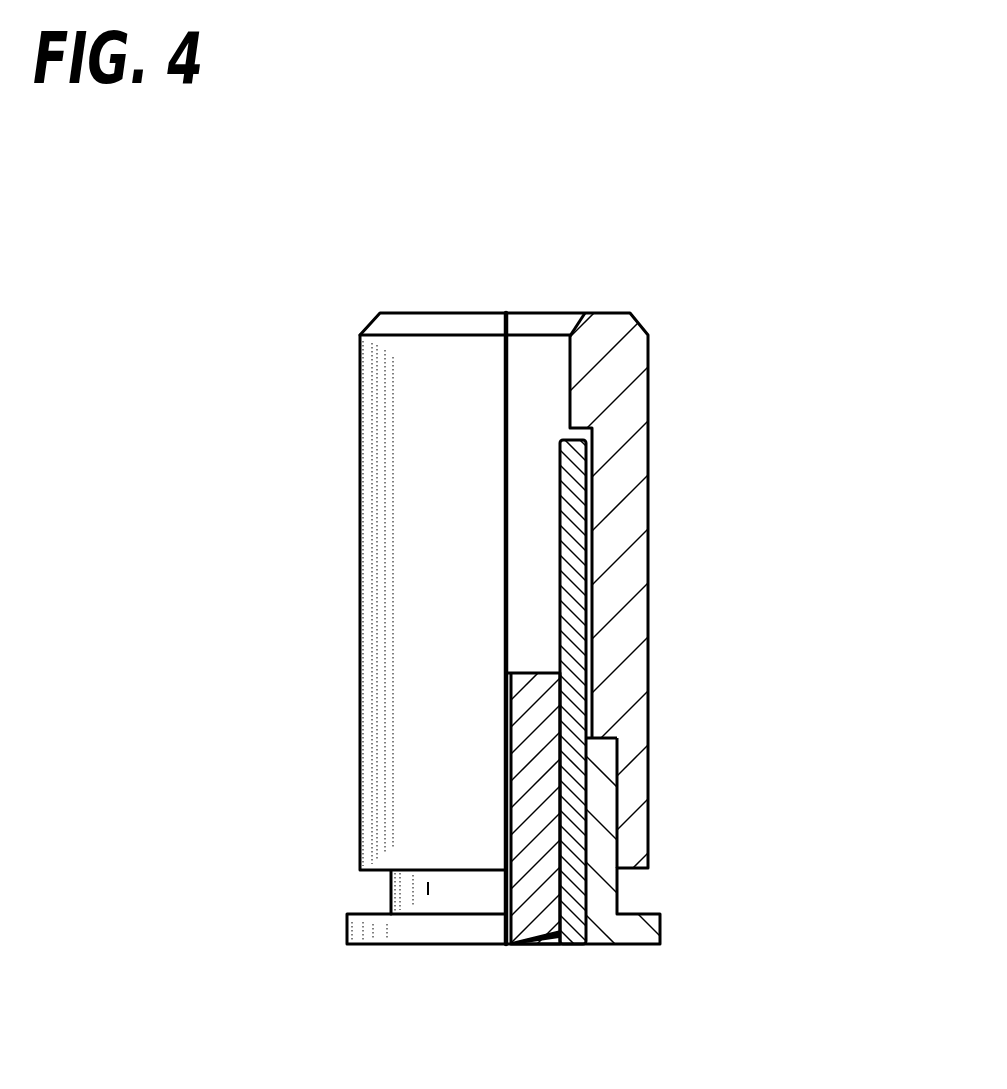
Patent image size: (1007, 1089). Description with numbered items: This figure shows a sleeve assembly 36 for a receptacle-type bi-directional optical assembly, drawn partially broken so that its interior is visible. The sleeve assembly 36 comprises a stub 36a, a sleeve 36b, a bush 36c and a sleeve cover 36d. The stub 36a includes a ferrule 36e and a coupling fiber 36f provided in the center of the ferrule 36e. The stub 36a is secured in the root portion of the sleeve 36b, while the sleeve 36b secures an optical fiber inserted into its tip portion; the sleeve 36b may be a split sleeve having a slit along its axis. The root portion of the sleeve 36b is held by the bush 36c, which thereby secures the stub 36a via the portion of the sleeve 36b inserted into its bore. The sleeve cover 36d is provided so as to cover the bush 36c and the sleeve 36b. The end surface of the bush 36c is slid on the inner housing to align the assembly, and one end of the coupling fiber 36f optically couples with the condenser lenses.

The sleeve assembly 36 is at (845, 268).
The stub 36a is at (806, 786).
The sleeve 36b is at (570, 615).
The bush 36c is at (610, 755).
The sleeve cover 36d is at (622, 514).
The ferrule 36e is at (545, 793).
The coupling fiber 36f is at (512, 890).